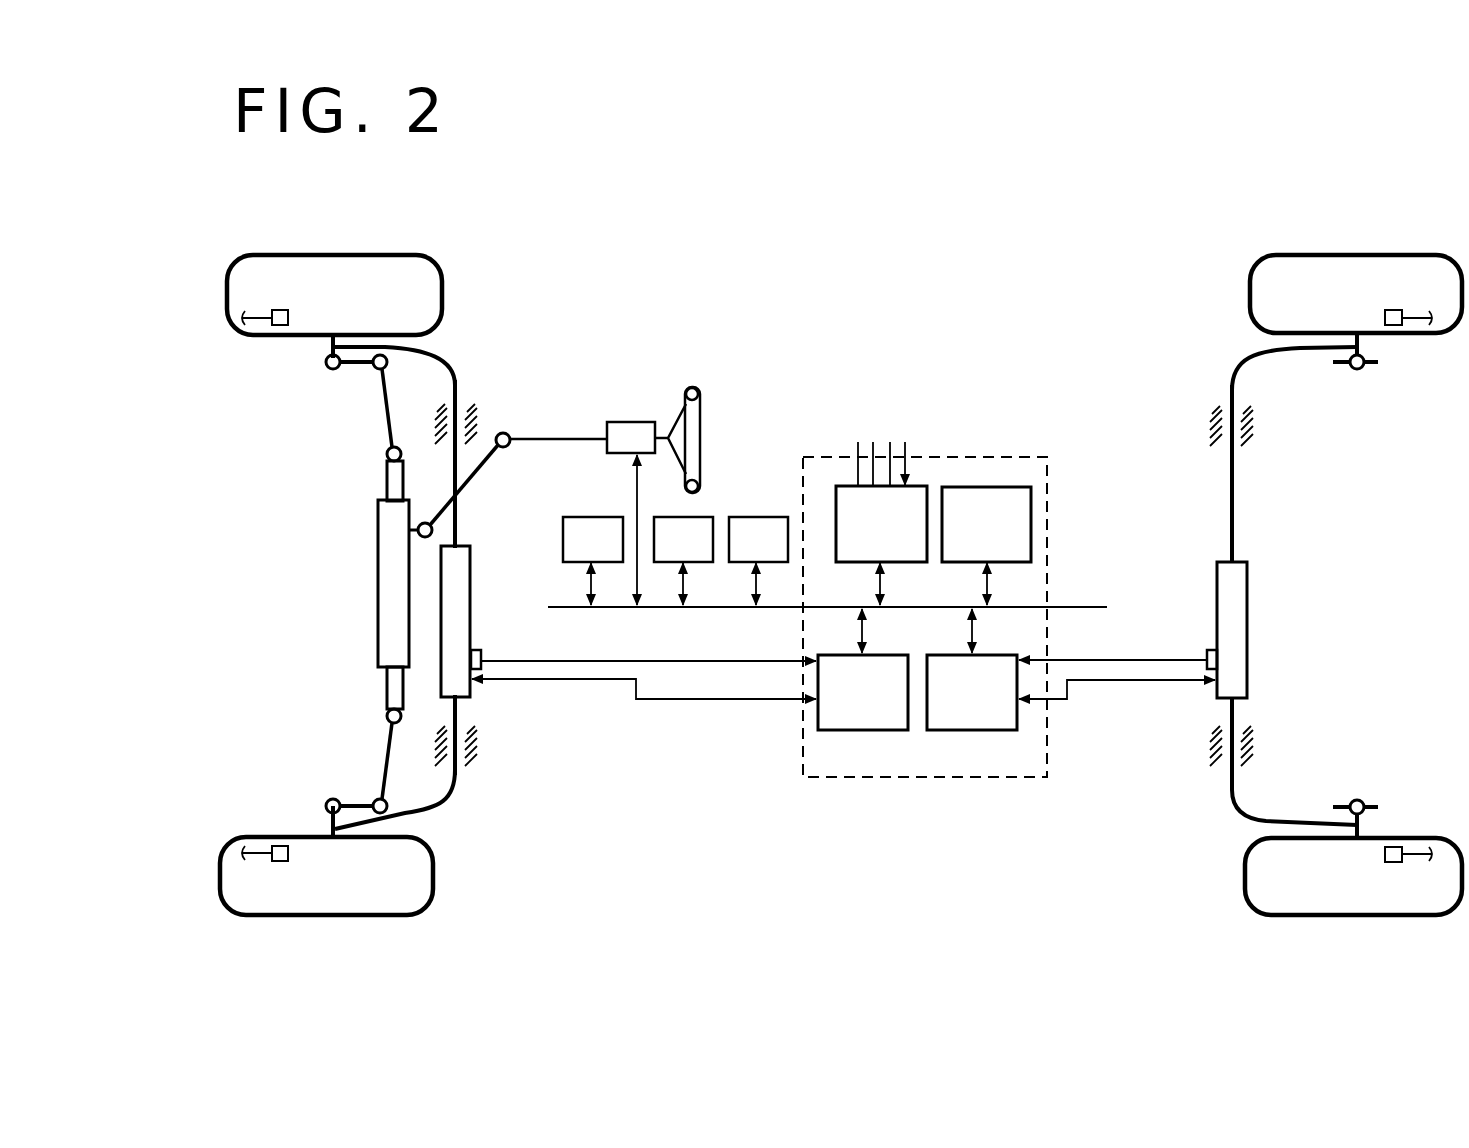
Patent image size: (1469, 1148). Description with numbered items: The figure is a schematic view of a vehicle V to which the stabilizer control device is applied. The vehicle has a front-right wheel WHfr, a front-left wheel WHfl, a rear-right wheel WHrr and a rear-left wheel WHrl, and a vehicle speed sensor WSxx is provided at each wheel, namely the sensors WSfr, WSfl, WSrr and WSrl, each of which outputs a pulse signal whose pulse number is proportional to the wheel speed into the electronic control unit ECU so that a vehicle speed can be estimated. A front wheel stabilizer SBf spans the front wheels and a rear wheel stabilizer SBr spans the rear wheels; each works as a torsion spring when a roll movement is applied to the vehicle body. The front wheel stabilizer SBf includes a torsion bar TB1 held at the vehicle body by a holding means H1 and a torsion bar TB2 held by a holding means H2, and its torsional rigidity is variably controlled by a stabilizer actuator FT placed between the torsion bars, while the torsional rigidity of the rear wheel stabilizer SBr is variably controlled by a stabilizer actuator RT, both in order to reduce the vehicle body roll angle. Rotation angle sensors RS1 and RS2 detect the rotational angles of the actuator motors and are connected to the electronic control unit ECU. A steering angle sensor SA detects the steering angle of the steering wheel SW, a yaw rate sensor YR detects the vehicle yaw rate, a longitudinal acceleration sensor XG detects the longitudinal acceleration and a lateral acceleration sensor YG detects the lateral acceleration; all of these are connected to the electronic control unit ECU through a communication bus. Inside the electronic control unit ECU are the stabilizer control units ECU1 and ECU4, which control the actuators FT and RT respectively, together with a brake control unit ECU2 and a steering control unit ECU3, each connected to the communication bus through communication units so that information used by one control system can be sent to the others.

The vehicle V is at (200, 580).
The front-right wheel WHfr is at (334, 295).
The front-left wheel WHfl is at (326, 876).
The rear-right wheel WHrr is at (1356, 294).
The rear-left wheel WHrl is at (1353, 876).
The front-right vehicle speed sensor WSfr is at (261, 338).
The front-left vehicle speed sensor WSfl is at (259, 832).
The rear-right vehicle speed sensor WSrr is at (1409, 338).
The rear-left vehicle speed sensor WSrl is at (1408, 833).
The front wheel stabilizer SBf is at (444, 348).
The rear wheel stabilizer SBr is at (1243, 350).
The torsion bar TB1 is at (458, 362).
The torsion bar TB2 is at (458, 780).
The holding means H1 is at (476, 415).
The holding means H2 is at (476, 745).
The stabilizer actuator FT is at (472, 568).
The stabilizer actuator RT is at (1249, 572).
The rotation angle sensor RS1 is at (479, 652).
The rotation angle sensor RS2 is at (1208, 650).
The steering wheel SW is at (688, 388).
The steering angle sensor SA is at (582, 513).
The yaw rate sensor YR is at (593, 561).
The longitudinal acceleration sensor XG is at (683, 561).
The lateral acceleration sensor YG is at (758, 561).
The electronic control unit ECU is at (950, 456).
The vehicle speed sensor WSxx is at (881, 448).
The stabilizer control unit ECU1 is at (690, 669).
The brake control unit ECU2 is at (881, 545).
The steering control unit ECU3 is at (986, 546).
The stabilizer control unit ECU4 is at (1071, 669).